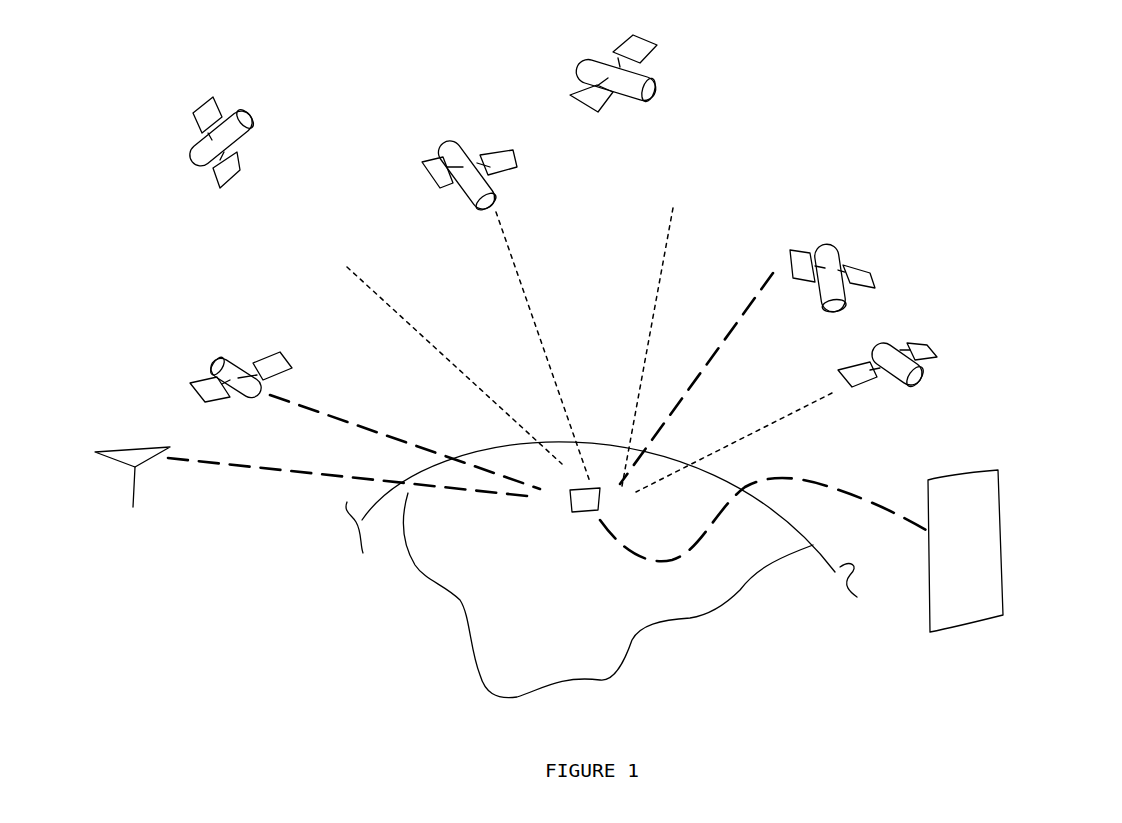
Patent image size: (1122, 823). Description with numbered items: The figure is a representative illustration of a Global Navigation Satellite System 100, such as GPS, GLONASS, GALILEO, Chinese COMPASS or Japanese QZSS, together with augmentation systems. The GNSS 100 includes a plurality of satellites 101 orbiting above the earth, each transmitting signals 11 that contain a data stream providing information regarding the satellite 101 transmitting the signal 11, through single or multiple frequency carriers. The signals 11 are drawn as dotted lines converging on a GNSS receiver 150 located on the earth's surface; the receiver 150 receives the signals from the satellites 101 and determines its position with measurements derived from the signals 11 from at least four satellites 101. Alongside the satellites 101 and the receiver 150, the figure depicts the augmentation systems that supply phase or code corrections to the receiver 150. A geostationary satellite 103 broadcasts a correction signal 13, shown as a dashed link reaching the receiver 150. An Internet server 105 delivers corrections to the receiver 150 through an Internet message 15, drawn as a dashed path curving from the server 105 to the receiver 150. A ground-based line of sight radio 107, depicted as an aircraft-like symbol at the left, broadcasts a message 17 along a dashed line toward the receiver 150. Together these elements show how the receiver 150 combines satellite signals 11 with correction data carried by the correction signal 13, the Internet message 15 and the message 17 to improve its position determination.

The Global Navigation Satellite System 100 is at (808, 132).
The satellite 101 is at (205, 178).
The geostationary satellite 103 is at (880, 270).
The Internet server 105 is at (1008, 488).
The ground-based line of sight radio 107 is at (148, 472).
The GNSS receiver 150 is at (600, 516).
The signal 11 is at (403, 308).
The correction signal 13 is at (325, 401).
The Internet message 15 is at (870, 508).
The message 17 is at (257, 476).